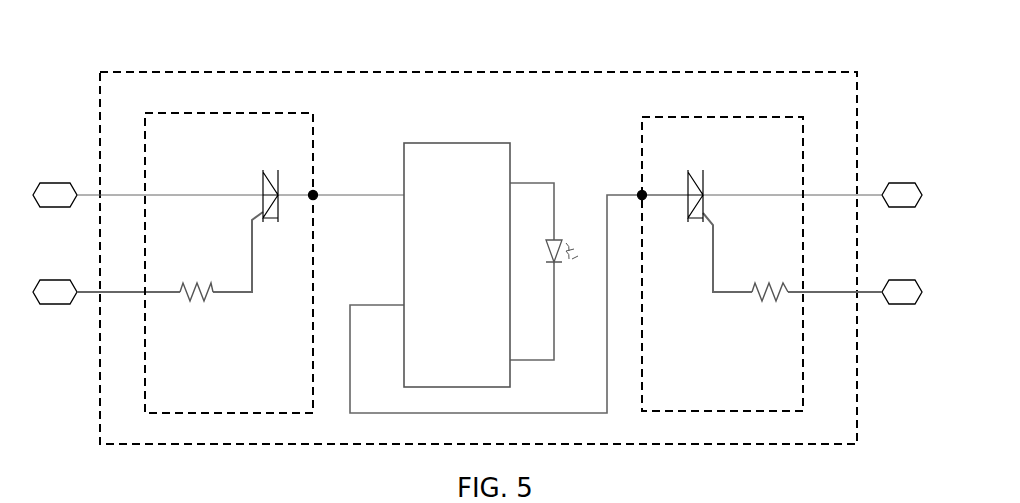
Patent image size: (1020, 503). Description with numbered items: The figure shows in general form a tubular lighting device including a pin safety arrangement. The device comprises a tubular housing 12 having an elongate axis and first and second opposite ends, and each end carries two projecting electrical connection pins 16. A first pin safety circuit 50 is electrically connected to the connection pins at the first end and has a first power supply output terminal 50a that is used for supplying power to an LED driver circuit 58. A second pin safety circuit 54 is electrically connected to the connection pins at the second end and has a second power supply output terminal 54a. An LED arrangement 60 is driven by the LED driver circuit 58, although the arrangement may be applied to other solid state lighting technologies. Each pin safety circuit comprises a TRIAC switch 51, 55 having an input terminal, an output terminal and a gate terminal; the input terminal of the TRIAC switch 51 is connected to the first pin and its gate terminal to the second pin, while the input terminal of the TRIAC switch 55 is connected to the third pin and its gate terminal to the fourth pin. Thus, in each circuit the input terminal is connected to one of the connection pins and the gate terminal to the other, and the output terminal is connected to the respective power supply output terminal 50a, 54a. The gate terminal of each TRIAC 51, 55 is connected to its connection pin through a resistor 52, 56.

The tubular housing 12 is at (594, 72).
The electrical connection pins 16 is at (55, 168).
The first pin safety circuit 50 is at (162, 112).
The first power supply output terminal 50a is at (318, 190).
The TRIAC switch 51 is at (283, 168).
The resistor 52 is at (213, 286).
The second pin safety circuit 54 is at (672, 110).
The second power supply output terminal 54a is at (640, 190).
The TRIAC switch 55 is at (708, 170).
The resistor 56 is at (790, 290).
The LED driver circuit 58 is at (417, 142).
The LED arrangement 60 is at (557, 168).